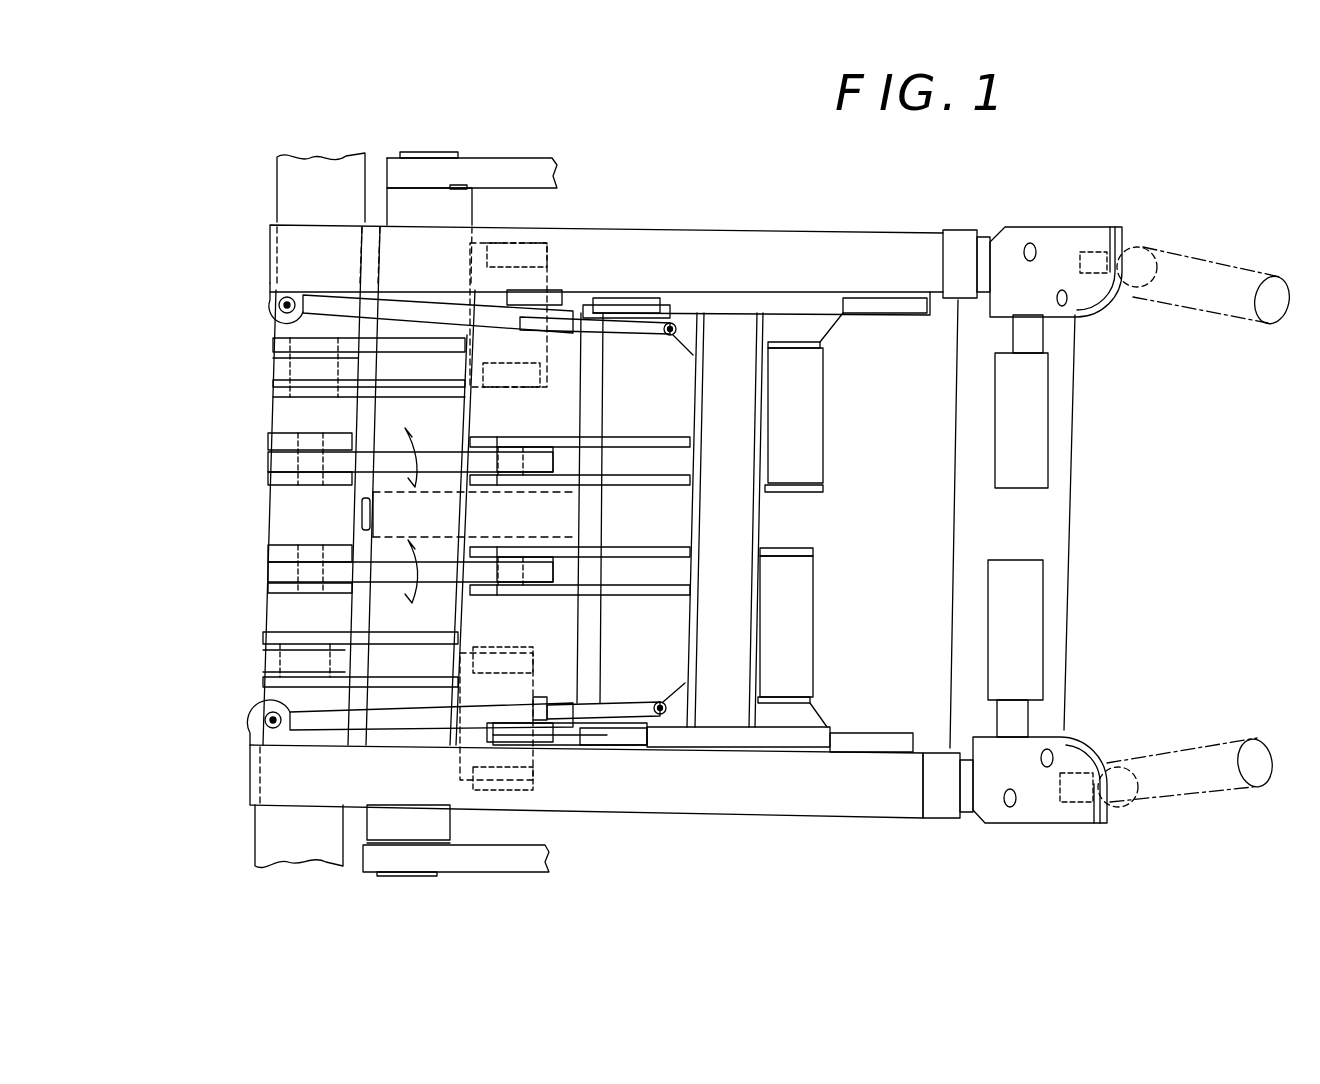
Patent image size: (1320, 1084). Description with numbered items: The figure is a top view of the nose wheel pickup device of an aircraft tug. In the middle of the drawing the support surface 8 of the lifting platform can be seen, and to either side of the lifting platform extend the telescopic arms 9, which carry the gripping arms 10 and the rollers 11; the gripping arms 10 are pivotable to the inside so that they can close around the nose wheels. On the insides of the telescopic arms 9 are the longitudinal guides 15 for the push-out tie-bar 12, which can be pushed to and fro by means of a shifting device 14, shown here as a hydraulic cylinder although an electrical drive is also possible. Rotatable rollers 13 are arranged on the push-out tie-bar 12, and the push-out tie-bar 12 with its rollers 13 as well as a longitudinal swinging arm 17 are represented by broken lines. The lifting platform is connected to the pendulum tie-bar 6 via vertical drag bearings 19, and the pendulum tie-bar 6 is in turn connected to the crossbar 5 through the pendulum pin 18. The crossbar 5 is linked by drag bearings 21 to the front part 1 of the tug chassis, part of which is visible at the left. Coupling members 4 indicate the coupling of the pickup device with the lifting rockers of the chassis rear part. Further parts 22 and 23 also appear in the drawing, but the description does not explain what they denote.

The machine column 1 is at (295, 193).
The guide plate 4 is at (528, 178).
The bearing block 5 is at (410, 213).
The carriage 6 is at (554, 410).
The frame 8 is at (928, 510).
The lower beam 9 is at (788, 795).
The piston rod 10 is at (1013, 727).
The guide block 11 is at (1022, 625).
The central column 12 is at (730, 700).
The support block 13 is at (800, 617).
The lever 14 is at (408, 718).
The rail 15 is at (885, 740).
The transfer rod 17 is at (382, 572).
The holder 18 is at (393, 507).
The slide 19 is at (553, 303).
The clamp 21 is at (272, 660).
The locking pins 22 is at (530, 780).
The cover plate 23 is at (452, 190).